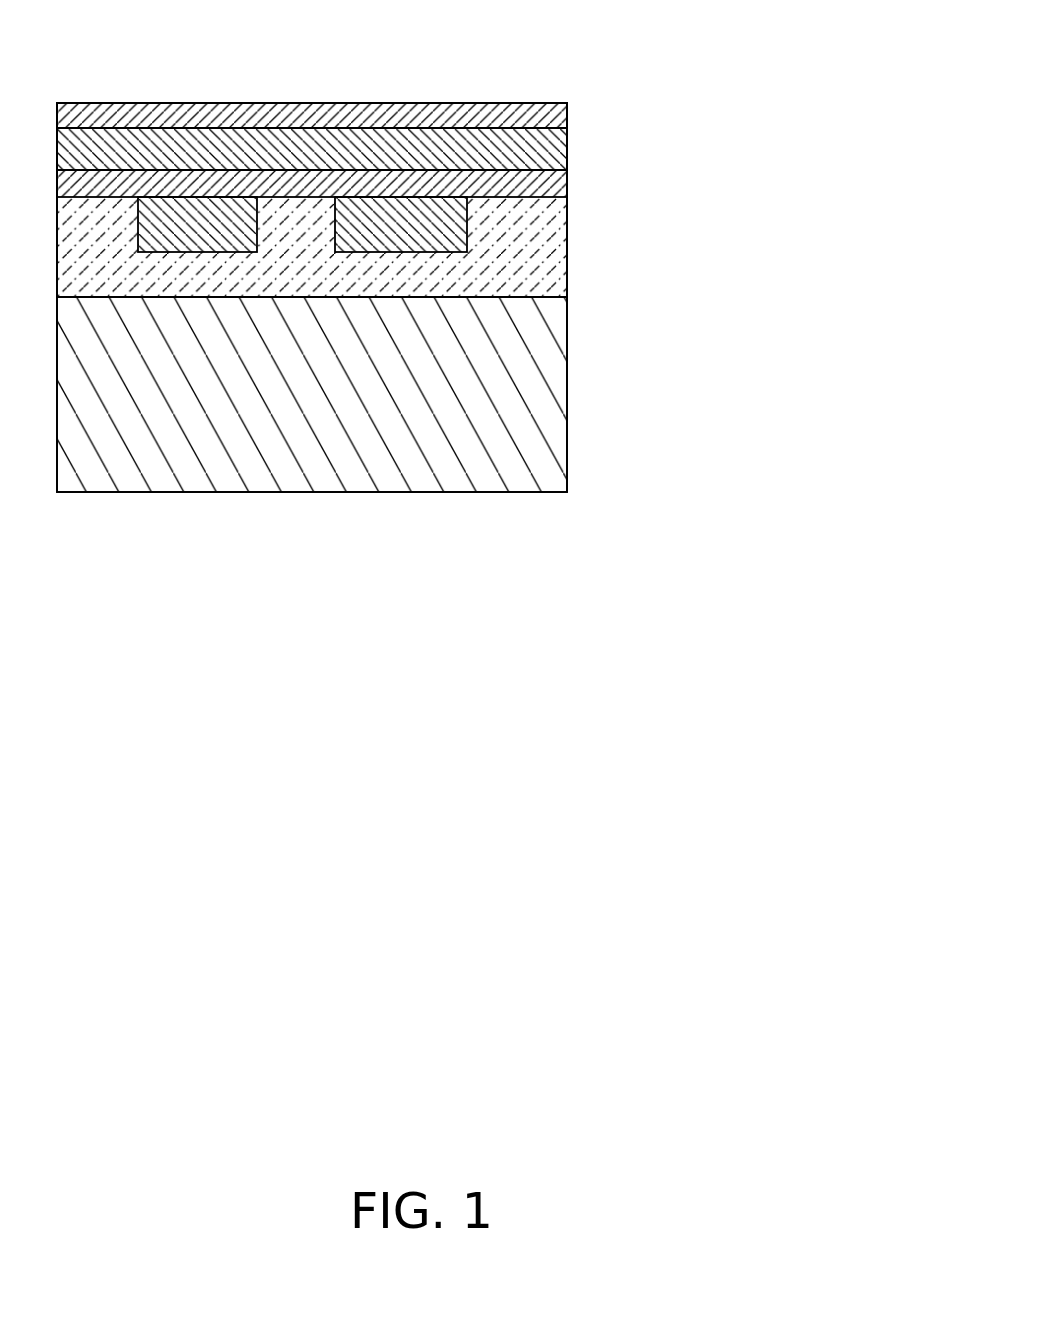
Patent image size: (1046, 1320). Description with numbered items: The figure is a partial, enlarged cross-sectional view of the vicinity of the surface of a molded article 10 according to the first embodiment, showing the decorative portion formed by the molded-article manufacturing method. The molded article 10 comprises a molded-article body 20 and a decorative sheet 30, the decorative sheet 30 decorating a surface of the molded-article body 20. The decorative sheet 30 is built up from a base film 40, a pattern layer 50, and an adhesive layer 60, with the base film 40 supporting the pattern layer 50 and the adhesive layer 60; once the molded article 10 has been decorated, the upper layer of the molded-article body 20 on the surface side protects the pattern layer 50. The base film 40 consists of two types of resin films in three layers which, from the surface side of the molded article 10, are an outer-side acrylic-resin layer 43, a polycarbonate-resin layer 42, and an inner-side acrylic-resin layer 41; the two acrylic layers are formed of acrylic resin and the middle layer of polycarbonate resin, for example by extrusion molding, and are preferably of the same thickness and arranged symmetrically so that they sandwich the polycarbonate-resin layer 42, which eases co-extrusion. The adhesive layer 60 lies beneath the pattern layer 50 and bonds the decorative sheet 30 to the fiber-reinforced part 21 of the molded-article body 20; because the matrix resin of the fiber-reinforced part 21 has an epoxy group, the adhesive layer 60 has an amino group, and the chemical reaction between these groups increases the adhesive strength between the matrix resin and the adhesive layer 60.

The molded article 10 is at (608, 89).
The molded-article body 20 is at (598, 486).
The fiber-reinforced part 21 is at (548, 433).
The decorative sheet 30 is at (767, 128).
The base film 40 is at (683, 100).
The inner-side acrylic-resin layer 41 is at (552, 185).
The polycarbonate-resin layer 42 is at (552, 153).
The outer-side acrylic-resin layer 43 is at (555, 118).
The pattern layer 50 is at (460, 227).
The adhesive layer 60 is at (550, 262).